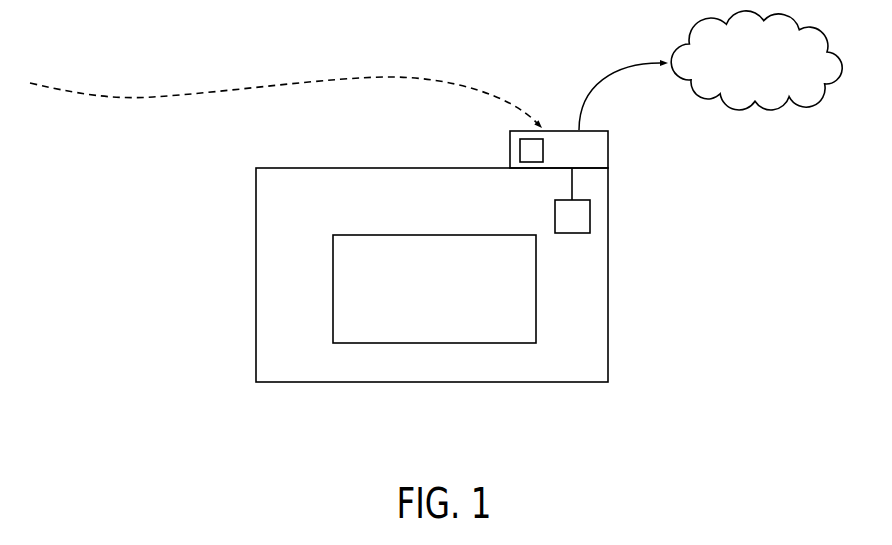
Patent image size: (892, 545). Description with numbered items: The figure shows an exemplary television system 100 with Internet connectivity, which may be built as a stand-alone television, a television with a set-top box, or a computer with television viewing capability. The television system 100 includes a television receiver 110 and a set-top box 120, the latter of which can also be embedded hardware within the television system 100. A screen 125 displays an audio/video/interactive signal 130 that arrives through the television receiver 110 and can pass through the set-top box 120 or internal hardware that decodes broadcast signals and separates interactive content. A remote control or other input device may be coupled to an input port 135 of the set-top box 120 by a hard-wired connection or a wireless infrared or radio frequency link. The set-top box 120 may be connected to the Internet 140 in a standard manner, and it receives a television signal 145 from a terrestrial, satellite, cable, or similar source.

The television system 100 is at (415, 413).
The television receiver 110 is at (590, 216).
The set-top box 120 is at (608, 149).
The screen 125 is at (536, 286).
The audio/video/interactive signal 130 is at (572, 184).
The input port 135 is at (520, 150).
The Internet 140 is at (775, 88).
The television signal 145 is at (135, 98).